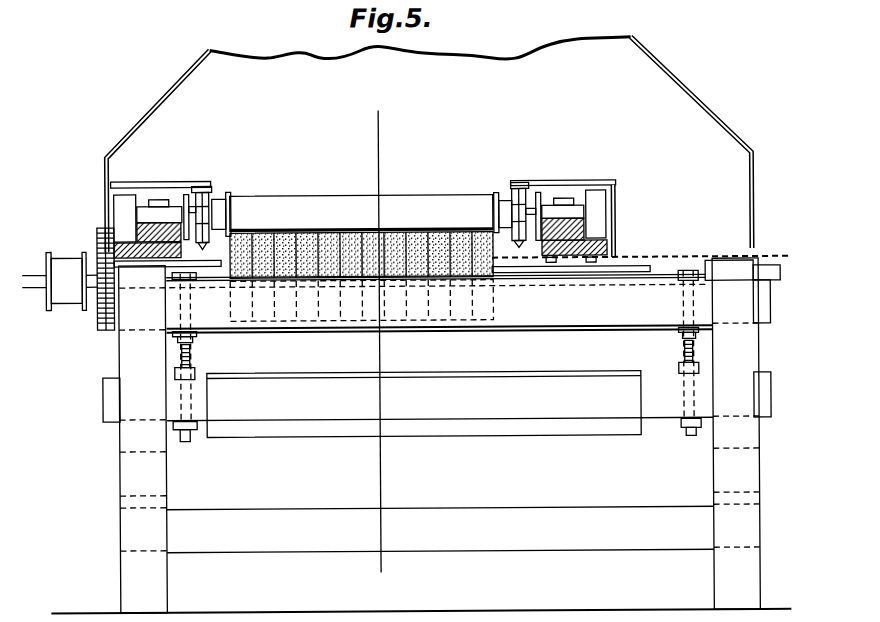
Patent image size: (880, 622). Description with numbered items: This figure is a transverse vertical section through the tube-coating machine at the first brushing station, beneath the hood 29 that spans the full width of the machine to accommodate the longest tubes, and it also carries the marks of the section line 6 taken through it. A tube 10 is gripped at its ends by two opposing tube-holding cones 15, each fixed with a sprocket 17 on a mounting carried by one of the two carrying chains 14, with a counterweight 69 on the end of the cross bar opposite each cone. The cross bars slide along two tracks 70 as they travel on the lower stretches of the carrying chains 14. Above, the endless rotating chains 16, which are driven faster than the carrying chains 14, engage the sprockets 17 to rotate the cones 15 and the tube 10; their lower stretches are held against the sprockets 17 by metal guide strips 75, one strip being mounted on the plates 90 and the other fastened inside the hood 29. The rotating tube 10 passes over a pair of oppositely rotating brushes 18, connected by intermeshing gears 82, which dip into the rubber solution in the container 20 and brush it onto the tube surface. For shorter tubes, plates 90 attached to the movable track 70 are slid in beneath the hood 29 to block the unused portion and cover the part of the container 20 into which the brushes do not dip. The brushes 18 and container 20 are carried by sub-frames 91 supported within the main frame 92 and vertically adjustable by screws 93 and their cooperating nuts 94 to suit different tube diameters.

The section line 6- 6 is at (392, 110).
The tube 10 is at (321, 195).
The carrying chain 14 is at (158, 199).
The tube-holding cone 15 is at (235, 196).
The rotating chain 16 is at (214, 191).
The sprocket 17 is at (201, 248).
The brush 18 is at (432, 232).
The container 20 is at (456, 333).
The hood 29 is at (709, 112).
The counterweight 69 is at (123, 198).
The track 70 is at (133, 231).
The guide strip 75 is at (202, 185).
The intermeshing gear 82 is at (98, 236).
The plate 90 is at (689, 256).
The sub-frame 91 is at (596, 314).
The main frame 92 is at (723, 476).
The screw 93 is at (196, 360).
The nut 94 is at (196, 339).